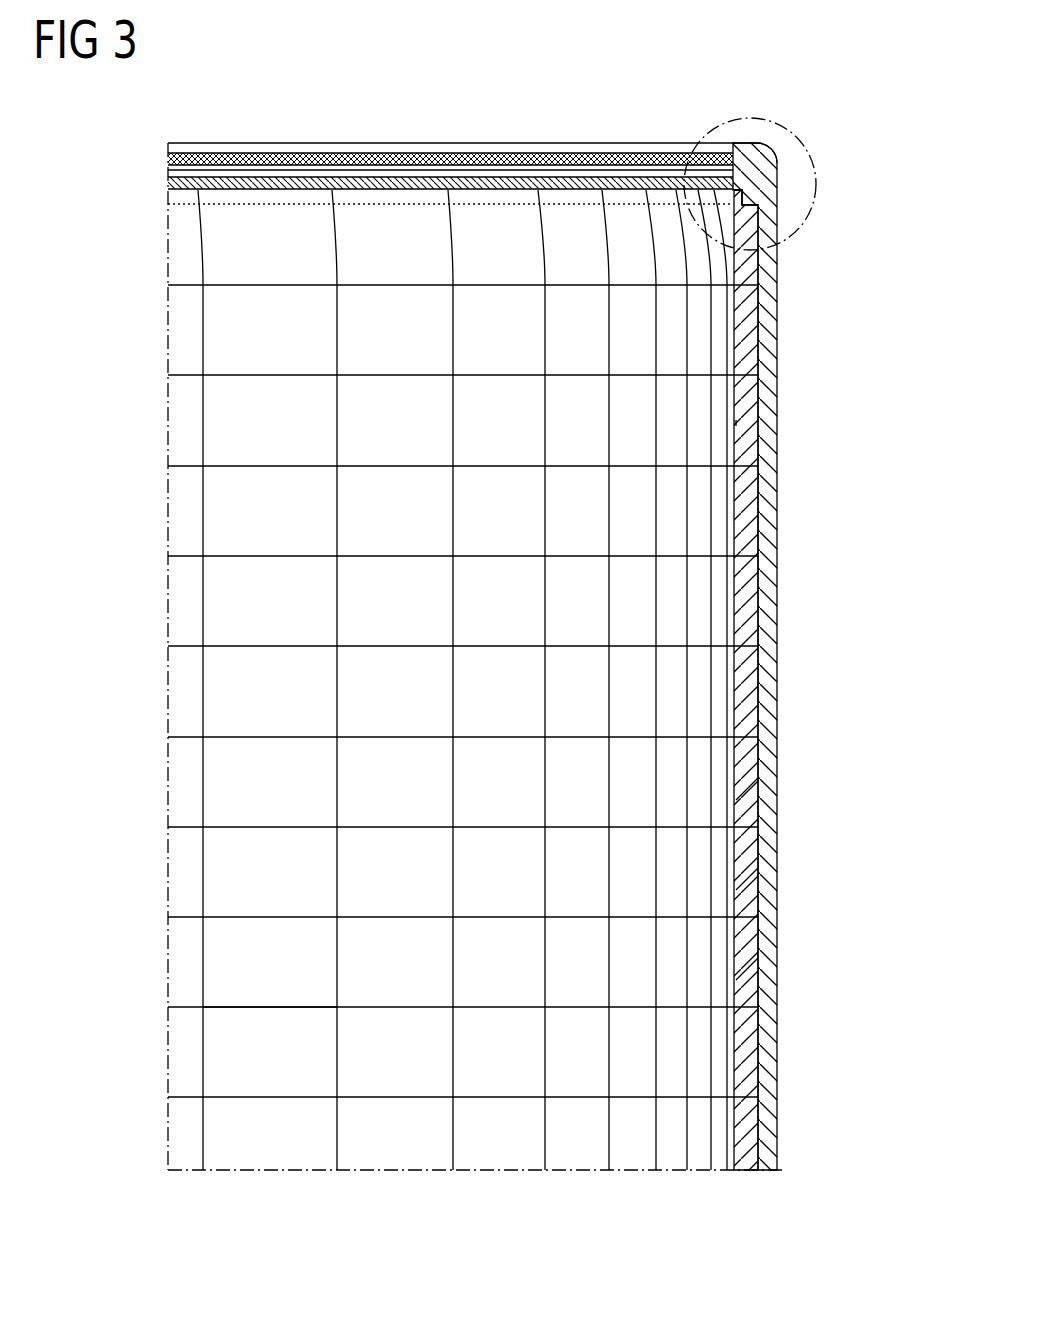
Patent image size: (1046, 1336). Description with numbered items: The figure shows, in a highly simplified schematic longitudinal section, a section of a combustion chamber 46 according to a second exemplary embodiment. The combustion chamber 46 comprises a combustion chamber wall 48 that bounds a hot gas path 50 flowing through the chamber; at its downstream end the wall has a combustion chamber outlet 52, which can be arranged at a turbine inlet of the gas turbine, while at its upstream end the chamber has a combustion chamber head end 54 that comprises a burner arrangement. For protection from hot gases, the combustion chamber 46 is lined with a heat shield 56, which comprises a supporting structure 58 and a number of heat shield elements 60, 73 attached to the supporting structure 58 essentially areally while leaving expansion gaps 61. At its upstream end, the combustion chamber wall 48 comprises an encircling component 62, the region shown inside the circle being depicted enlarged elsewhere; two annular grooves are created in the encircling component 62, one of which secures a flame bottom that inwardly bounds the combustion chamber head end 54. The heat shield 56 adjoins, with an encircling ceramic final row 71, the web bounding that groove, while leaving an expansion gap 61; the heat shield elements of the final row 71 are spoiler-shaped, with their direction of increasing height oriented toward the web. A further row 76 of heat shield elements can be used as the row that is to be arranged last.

The combustion chamber 46 is at (633, 107).
The combustion chamber wall 48 is at (759, 552).
The hot gas path 50 is at (417, 620).
The combustion chamber outlet 52 is at (540, 1254).
The combustion chamber head end 54 is at (362, 137).
The heat shield 56 is at (182, 870).
The supporting structure 58 is at (779, 684).
The heat shield elements 60 is at (754, 795).
The expansion gaps 61 is at (240, 1010).
The encircling component 62 is at (758, 155).
The ceramic final row 71 is at (158, 240).
The heat shield elements 73 is at (750, 260).
The row 76 is at (158, 690).